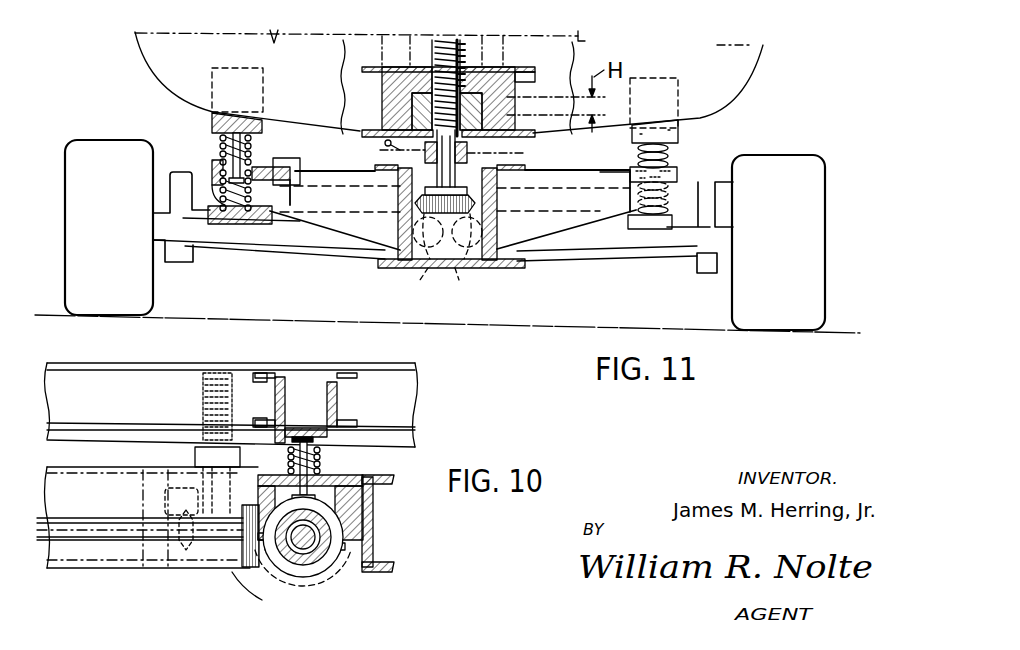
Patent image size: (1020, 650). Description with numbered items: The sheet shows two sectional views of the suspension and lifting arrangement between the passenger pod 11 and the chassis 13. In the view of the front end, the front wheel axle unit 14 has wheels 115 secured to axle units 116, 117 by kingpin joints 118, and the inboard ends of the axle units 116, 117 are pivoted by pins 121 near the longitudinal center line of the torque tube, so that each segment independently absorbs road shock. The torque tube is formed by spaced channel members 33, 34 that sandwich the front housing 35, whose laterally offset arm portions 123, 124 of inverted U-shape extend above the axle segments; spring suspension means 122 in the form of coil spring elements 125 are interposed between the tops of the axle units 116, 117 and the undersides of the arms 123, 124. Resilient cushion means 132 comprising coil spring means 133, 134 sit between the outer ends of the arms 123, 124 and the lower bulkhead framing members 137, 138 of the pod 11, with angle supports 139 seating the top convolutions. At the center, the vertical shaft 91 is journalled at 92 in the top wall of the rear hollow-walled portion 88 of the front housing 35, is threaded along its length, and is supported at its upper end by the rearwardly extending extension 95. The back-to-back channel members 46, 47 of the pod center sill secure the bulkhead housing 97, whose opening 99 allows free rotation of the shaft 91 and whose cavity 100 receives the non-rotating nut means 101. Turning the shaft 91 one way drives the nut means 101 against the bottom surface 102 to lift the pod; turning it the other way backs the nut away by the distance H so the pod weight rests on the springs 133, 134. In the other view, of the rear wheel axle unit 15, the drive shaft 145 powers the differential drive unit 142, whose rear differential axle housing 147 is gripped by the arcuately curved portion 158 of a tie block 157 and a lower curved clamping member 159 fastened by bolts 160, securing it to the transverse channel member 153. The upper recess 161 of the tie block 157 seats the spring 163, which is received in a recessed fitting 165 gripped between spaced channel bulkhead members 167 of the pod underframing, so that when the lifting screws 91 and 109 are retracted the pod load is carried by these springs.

In FIG. 11, the pod 11 is at (758, 75).
In FIG. 10, the pod 11 is at (51, 362).
In FIG. 11, the chassis 13 is at (738, 148).
In FIG. 10, the chassis 13 is at (160, 573).
In FIG. 11, the front wheel axle unit 14 is at (265, 252).
In FIG. 10, the rear wheel axle unit 15 is at (398, 571).
In FIG. 11, the channel member 33 is at (380, 171).
In FIG. 11, the channel member 34 is at (514, 170).
In FIG. 11, the front housing 35 is at (545, 238).
In FIG. 11, the channel member 46 is at (372, 68).
In FIG. 11, the channel member 47 is at (534, 72).
In FIG. 11, the rear hollow-walled portion 88 is at (453, 258).
In FIG. 11, the vertical shaft 91 is at (460, 44).
In FIG. 11, the journal 92 is at (480, 153).
In FIG. 11, the rearwardly extending extension 95 is at (400, 66).
In FIG. 11, the bulkhead housing 97 is at (430, 70).
In FIG. 11, the opening 99 is at (468, 60).
In FIG. 11, the cavity 100 is at (420, 98).
In FIG. 11, the nut means 101 is at (498, 118).
In FIG. 11, the bottom surface 102 is at (496, 98).
In FIG. 10, the lifting screw 109 is at (203, 372).
In FIG. 11, the wheels 115 is at (65, 211).
In FIG. 11, the axle unit 116 is at (308, 260).
In FIG. 11, the axle unit 117 is at (640, 258).
In FIG. 11, the kingpin joints 118 is at (176, 264).
In FIG. 11, the pins 121 is at (447, 249).
In FIG. 11, the spring suspension means 122 is at (257, 198).
In FIG. 11, the arm portion 123 is at (326, 176).
In FIG. 11, the arm portion 124 is at (594, 188).
In FIG. 11, the coil spring elements 125 is at (266, 179).
In FIG. 11, the resilient cushion means 132 is at (222, 142).
In FIG. 11, the coil spring means 133 is at (250, 146).
In FIG. 11, the coil spring means 134 is at (632, 151).
In FIG. 11, the lower bulkhead framing member 137 is at (302, 97).
In FIG. 11, the lower bulkhead framing member 138 is at (723, 84).
In FIG. 11, the angle supports 139 is at (212, 127).
In FIG. 10, the differential drive unit 142 is at (380, 572).
In FIG. 10, the drive shaft 145 is at (104, 508).
In FIG. 10, the rear differential axle housing 147 is at (308, 554).
In FIG. 10, the transverse channel member 153 is at (374, 486).
In FIG. 10, the tie block 157 is at (362, 473).
In FIG. 10, the arcuately curved lower portion 158 is at (373, 518).
In FIG. 10, the lower curved clamping member 159 is at (300, 555).
In FIG. 10, the bolts 160 is at (268, 560).
In FIG. 10, the recess 161 is at (325, 474).
In FIG. 10, the spring 163 is at (292, 451).
In FIG. 10, the recessed fitting 165 is at (291, 380).
In FIG. 10, the channel bulkhead members 167 is at (262, 372).